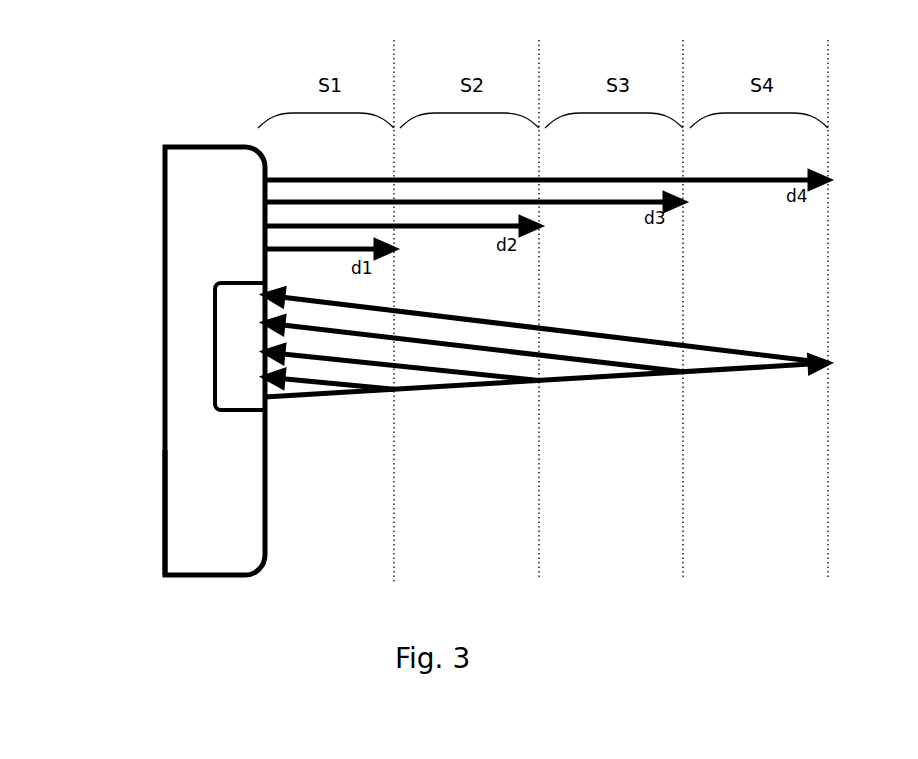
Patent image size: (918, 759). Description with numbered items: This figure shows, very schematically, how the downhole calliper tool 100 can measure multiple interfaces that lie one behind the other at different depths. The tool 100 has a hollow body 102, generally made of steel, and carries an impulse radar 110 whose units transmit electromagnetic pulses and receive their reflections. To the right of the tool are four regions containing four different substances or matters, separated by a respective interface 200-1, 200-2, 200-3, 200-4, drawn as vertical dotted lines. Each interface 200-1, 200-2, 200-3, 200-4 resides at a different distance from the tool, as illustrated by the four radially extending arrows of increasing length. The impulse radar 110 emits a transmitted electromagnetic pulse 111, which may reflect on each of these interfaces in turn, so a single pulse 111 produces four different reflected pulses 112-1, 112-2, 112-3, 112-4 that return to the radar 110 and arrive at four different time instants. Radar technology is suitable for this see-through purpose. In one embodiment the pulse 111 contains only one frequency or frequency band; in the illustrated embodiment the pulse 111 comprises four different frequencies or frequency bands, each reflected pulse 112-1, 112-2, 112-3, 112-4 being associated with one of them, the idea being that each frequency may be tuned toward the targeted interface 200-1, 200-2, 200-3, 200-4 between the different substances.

The downhole calliper tool 100 is at (128, 142).
The hollow body 102 is at (185, 488).
The impulse radar 110 is at (232, 388).
The transmitted electromagnetic pulse 111 is at (546, 403).
The reflected pulse 112-1 is at (329, 377).
The reflected pulse 112-2 is at (402, 363).
The reflected pulse 112-3 is at (474, 344).
The reflected pulse 112-4 is at (546, 326).
The interface 200-1 is at (383, 294).
The interface 200-2 is at (528, 290).
The interface 200-3 is at (673, 290).
The interface 200-4 is at (821, 290).